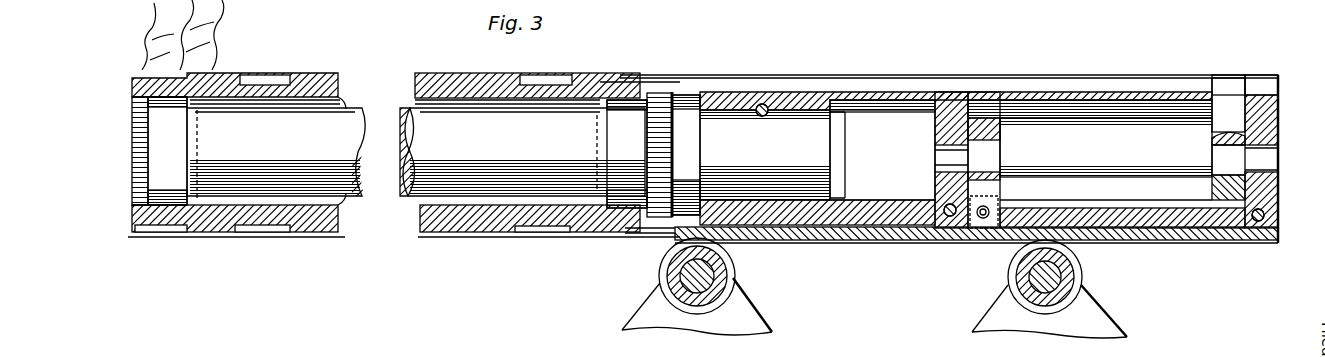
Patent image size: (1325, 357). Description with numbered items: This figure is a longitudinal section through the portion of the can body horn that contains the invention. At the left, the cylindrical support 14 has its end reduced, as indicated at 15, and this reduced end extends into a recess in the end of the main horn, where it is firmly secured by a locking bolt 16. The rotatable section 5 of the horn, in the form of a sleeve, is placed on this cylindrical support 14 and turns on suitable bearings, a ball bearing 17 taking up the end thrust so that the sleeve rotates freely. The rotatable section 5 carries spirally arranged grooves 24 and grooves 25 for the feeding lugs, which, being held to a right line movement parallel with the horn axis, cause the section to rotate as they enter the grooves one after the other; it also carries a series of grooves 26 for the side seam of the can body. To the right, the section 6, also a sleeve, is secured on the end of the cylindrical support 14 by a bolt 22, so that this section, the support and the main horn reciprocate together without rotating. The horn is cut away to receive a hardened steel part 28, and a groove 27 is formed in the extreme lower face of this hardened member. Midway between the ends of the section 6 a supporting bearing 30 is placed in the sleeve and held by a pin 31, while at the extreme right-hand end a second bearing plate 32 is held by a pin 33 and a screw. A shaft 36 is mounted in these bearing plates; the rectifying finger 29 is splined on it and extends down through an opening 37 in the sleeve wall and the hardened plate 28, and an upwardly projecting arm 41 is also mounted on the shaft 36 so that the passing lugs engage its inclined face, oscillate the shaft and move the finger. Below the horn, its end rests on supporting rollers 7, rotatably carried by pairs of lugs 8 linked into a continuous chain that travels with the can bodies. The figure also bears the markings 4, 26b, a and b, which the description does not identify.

The section line 4- 4 is at (162, 60).
The rotatable section 5 is at (490, 214).
The section 6 is at (1099, 92).
The supporting rollers 7 is at (662, 265).
The lugs 8 is at (1150, 331).
The cylindrical support 14 is at (662, 178).
The reduced end 15 is at (1275, 62).
The locking bolt 16 is at (990, 55).
The ball bearing 17 is at (676, 122).
The bolt 22 is at (765, 102).
The grooves 24 is at (256, 233).
The grooves 25 is at (177, 234).
The grooves 26 is at (303, 73).
The rail portion 26b is at (1006, 344).
The groove 27 is at (1176, 244).
The hardened steel part 28 is at (1278, 240).
The rectifying finger 29 is at (992, 128).
The supporting bearing 30 is at (935, 177).
The pin 31 is at (944, 208).
The bearing plate 32 is at (1270, 150).
The pin 33 is at (1265, 217).
The shaft 36 is at (1106, 159).
The opening 37 is at (947, 243).
The arm 41 is at (1228, 105).
The top wall a is at (589, 84).
The bottom wall b is at (592, 231).